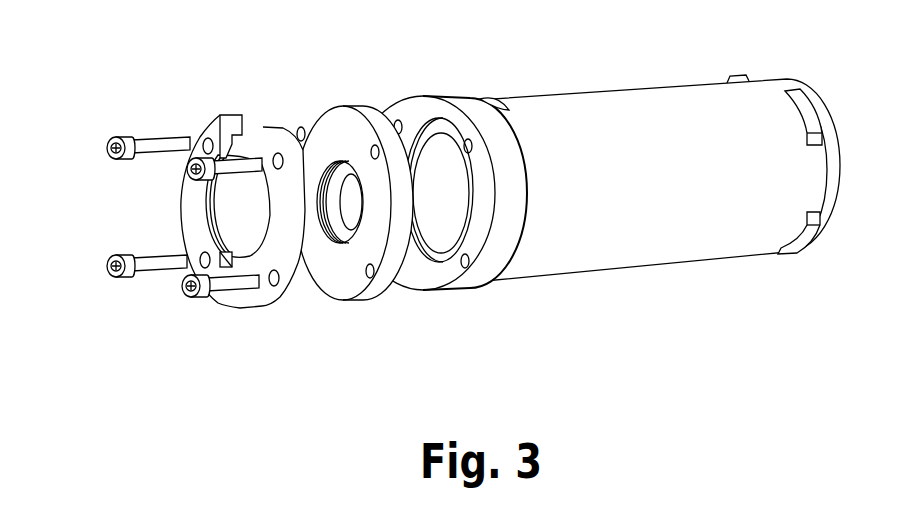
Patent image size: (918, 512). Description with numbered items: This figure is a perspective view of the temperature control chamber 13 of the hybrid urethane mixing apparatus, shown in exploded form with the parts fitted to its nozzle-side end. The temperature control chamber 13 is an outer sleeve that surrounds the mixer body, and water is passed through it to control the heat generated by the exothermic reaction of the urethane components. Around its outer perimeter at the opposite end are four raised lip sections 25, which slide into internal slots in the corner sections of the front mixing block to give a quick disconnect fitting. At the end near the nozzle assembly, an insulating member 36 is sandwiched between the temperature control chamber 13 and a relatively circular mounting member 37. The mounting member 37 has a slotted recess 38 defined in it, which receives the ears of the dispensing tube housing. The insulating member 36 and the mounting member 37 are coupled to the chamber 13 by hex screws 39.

The temperature control chamber 13 is at (665, 263).
The raised lip sections 25 is at (810, 92).
The insulating member 36 is at (379, 291).
The mounting member 37 is at (236, 108).
The slotted recess 38 is at (227, 250).
The hex screws 39 is at (103, 267).